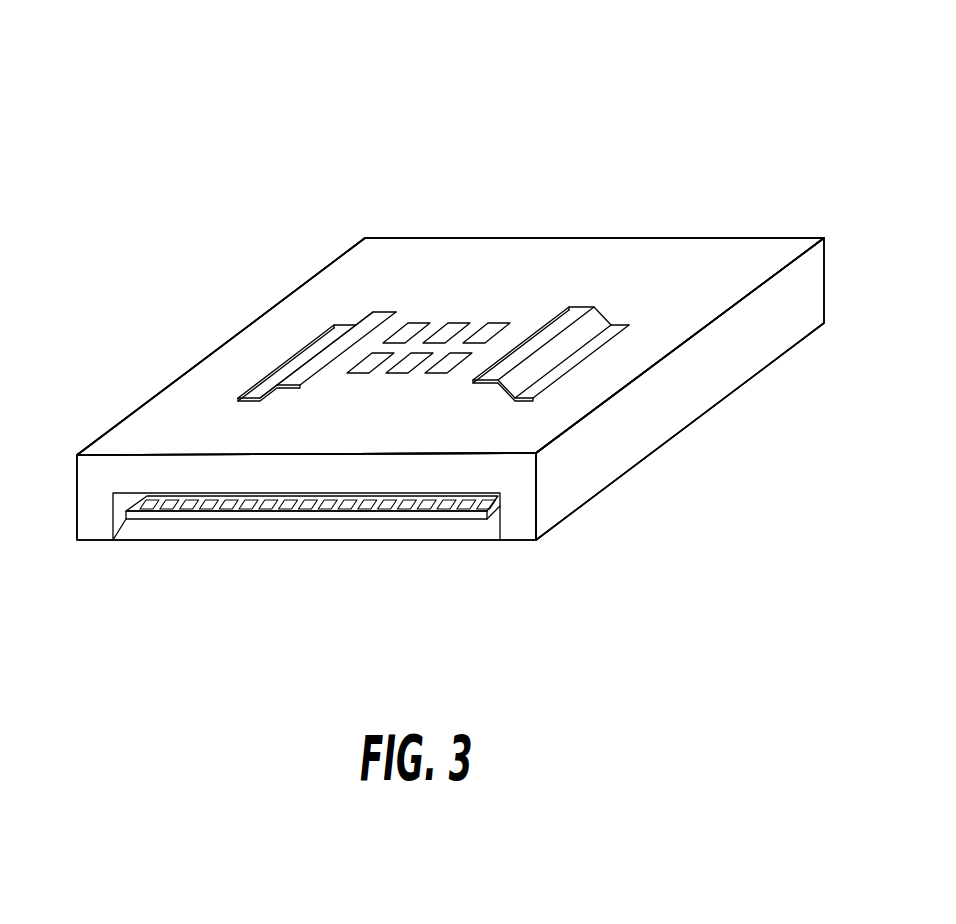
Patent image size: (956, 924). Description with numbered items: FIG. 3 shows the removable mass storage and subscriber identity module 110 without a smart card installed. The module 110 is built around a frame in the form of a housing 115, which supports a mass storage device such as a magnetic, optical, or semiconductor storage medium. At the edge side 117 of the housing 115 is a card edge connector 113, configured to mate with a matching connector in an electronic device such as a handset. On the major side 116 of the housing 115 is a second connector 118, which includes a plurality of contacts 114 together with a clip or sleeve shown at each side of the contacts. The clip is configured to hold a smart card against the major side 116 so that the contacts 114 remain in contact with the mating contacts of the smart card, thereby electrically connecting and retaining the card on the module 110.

The mass storage and subscriber identity module 110 is at (217, 105).
The card edge connector 113 is at (412, 515).
The contacts 114 is at (477, 315).
The housing 115 is at (720, 380).
The major side 116 is at (742, 275).
The edge side 117 is at (520, 497).
The second connector 118 is at (380, 277).